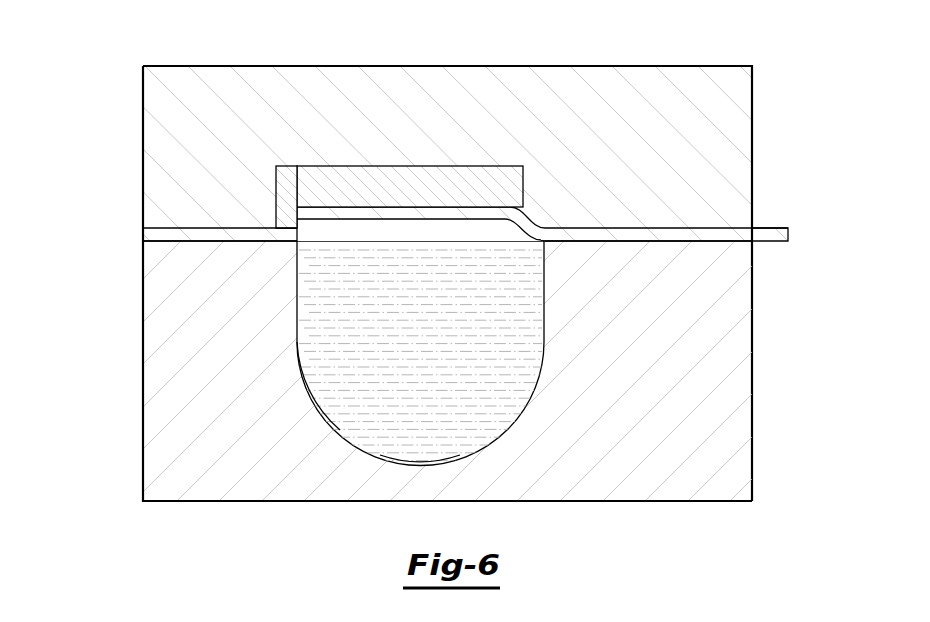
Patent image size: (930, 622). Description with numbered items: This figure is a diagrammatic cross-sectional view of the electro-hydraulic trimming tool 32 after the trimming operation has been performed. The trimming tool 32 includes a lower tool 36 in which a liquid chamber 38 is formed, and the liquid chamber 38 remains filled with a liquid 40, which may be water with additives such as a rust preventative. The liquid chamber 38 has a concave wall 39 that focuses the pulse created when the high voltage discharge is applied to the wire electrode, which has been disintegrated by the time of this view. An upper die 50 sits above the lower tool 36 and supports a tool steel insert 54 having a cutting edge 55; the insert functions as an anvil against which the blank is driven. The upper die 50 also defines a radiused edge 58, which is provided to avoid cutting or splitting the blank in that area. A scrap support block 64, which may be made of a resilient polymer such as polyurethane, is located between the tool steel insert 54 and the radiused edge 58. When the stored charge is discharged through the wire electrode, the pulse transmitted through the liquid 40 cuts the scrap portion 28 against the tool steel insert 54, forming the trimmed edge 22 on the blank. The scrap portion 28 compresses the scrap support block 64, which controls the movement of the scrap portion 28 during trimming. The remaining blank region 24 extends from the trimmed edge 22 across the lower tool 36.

The trimmed edge 22 is at (298, 231).
The first sheet portion 24 is at (168, 238).
The scrap portion 28 is at (790, 236).
The trimming tool 32 is at (100, 146).
The lower tool 36 is at (157, 385).
The liquid chamber 38 is at (478, 447).
The concave wall 39 is at (387, 456).
The liquid 40 is at (440, 452).
The upper die 50 is at (740, 142).
The tool steel insert 54 is at (282, 166).
The cutting edge 55 is at (277, 222).
The radiused edge 58 is at (529, 224).
The scrap support block 64 is at (402, 166).